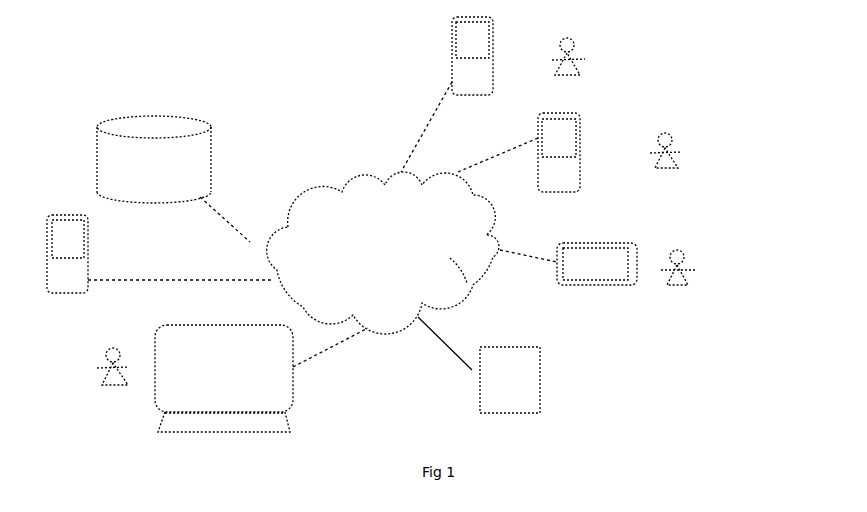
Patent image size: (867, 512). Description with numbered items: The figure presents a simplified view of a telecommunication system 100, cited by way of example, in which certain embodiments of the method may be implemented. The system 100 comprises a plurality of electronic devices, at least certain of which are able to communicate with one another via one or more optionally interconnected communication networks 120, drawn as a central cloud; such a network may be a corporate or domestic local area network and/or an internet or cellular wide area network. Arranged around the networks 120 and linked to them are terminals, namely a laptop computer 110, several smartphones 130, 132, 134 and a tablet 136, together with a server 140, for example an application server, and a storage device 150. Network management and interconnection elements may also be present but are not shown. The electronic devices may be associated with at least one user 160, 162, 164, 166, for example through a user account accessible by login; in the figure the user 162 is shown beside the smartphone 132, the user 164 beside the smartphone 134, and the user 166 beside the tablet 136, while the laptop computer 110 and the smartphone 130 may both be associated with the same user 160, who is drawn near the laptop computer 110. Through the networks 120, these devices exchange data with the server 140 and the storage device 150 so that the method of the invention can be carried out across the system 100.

The telecommunication system 100 is at (676, 108).
The laptop computer 110 is at (192, 333).
The communication networks 120 is at (487, 197).
The smartphone 130 is at (88, 263).
The smartphone 132 is at (493, 63).
The smartphone 134 is at (580, 167).
The tablet 136 is at (620, 262).
The server 140 is at (537, 378).
The storage device 150 is at (205, 146).
The user 160 is at (100, 381).
The user 162 is at (555, 72).
The user 164 is at (650, 167).
The user 166 is at (653, 288).